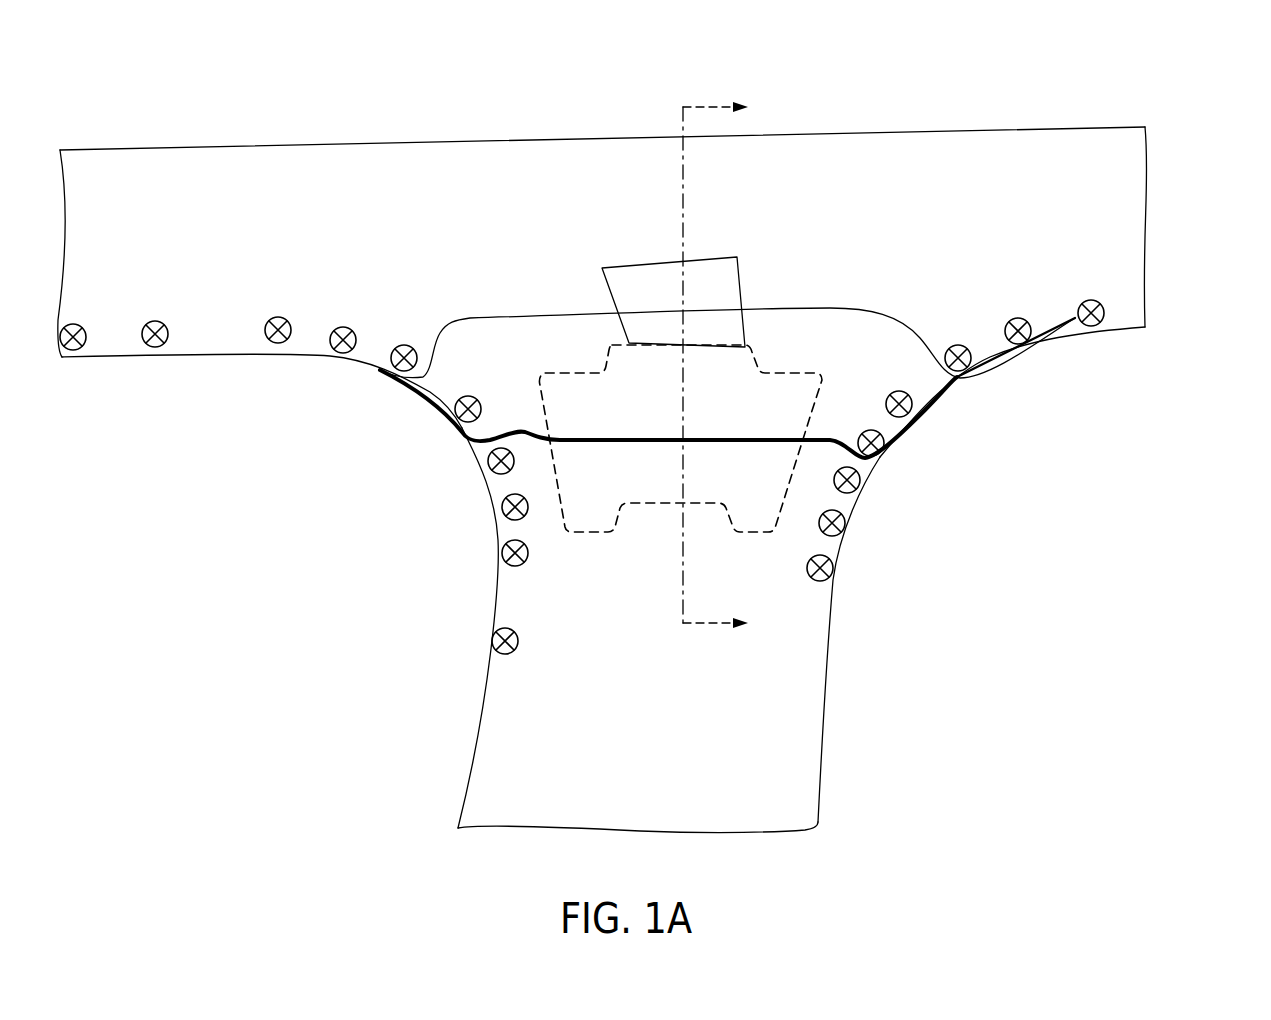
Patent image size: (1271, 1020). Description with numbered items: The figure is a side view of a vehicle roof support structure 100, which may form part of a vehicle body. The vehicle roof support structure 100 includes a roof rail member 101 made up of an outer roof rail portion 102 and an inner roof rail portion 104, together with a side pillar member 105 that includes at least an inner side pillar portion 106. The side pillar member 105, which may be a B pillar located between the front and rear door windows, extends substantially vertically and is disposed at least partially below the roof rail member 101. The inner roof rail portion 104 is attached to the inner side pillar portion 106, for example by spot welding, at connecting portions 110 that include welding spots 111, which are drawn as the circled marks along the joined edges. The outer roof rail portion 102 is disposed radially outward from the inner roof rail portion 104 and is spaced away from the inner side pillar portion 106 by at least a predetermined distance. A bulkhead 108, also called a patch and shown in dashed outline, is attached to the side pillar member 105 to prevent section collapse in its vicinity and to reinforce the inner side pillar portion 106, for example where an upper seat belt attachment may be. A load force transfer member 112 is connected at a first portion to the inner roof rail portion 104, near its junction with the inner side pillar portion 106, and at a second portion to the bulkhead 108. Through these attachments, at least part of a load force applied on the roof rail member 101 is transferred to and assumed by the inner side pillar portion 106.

The vehicle roof support structure 100 is at (1186, 98).
The roof rail member 101 is at (1187, 345).
The outer roof rail portion 102 is at (997, 200).
The inner roof rail portion 104 is at (930, 400).
The side pillar member 105 is at (857, 704).
The inner side pillar portion 106 is at (833, 627).
The bulkhead 108 is at (590, 498).
The connecting portions 110 is at (385, 404).
The welding spots 111 is at (457, 412).
The load force transfer member 112 is at (643, 265).